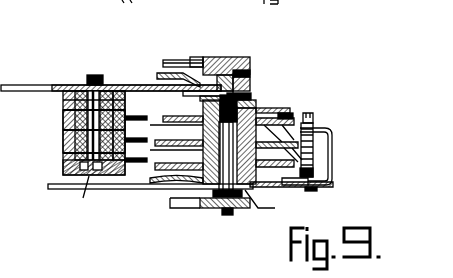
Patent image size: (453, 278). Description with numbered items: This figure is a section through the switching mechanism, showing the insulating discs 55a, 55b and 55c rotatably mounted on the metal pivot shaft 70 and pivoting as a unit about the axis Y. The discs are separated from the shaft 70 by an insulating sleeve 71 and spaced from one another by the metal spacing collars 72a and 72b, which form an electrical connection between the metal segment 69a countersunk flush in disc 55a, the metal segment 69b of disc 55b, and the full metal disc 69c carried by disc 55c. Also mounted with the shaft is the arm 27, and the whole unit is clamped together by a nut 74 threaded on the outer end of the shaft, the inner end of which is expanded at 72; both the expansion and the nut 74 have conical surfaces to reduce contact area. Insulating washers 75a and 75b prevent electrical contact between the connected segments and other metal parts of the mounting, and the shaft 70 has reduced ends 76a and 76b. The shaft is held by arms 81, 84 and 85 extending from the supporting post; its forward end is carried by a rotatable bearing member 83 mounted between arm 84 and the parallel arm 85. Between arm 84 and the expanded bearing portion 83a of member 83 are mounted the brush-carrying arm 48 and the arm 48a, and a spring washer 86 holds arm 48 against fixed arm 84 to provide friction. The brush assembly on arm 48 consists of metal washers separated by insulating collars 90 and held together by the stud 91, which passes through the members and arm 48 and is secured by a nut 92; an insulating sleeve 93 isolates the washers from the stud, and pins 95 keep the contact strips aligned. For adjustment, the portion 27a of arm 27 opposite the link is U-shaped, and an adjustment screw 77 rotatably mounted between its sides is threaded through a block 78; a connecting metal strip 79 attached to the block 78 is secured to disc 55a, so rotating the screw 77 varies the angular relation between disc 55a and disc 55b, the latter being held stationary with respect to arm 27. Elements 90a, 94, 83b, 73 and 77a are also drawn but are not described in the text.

The arm 48 is at (14, 85).
The arm 48a is at (160, 73).
The collars of insulating material 90 is at (72, 93).
The nut 92 is at (88, 78).
The bushing 94 is at (112, 90).
The block shoulder 90a is at (66, 100).
The pins 95 is at (64, 135).
The insulating sleeve 93 is at (64, 163).
The disc 55a is at (138, 123).
The disc 55b is at (139, 145).
The disc 55c is at (138, 166).
The arm 27 is at (111, 189).
The stud shaft 91 is at (77, 196).
The insulating washer 75a is at (183, 92).
The rotatable bearing member 83 is at (248, 66).
The expanded bearing portion 83a is at (178, 60).
The cap flange 83b is at (246, 57).
The arm 85 is at (198, 57).
The spring washer 86 is at (252, 96).
The reduced end 76a is at (258, 104).
The supporting arm 84 is at (272, 110).
The nut 74 is at (278, 142).
The metal spacing collar 72a is at (284, 114).
The axis Y is at (232, 57).
The metal segment 69a is at (179, 111).
The metal segment 69b is at (179, 135).
The disc 69c is at (176, 147).
The insulating washer 75b is at (150, 189).
The plate 73 is at (165, 198).
The insulating sleeve 71 is at (190, 208).
The arm 81 is at (170, 218).
The expanded inner end of shaft 72 is at (214, 208).
The reduced end 76b is at (234, 214).
The pivot shaft 70 is at (265, 190).
The metal spacing collar 72b is at (292, 190).
The adjustment screw 77 is at (313, 126).
The connecting metal strip 79 is at (332, 137).
The U-shaped portion of arm 27a is at (332, 155).
The block 78 is at (313, 172).
The post foot 77a is at (310, 192).